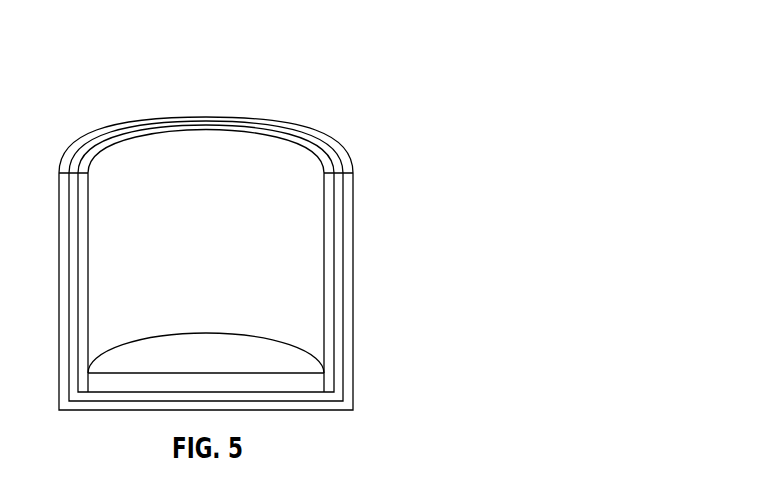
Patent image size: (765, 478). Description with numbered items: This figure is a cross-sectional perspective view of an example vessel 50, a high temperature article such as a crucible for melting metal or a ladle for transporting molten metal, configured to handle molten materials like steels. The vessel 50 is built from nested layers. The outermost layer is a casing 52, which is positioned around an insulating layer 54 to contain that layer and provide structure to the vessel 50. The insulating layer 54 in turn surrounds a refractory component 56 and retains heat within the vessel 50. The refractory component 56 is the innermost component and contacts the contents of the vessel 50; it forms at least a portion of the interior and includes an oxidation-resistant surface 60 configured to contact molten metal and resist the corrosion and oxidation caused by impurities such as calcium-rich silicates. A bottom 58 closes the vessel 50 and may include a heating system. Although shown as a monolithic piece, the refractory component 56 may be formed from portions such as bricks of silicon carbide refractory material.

The vessel 50 is at (243, 246).
The casing 52 is at (347, 273).
The insulating layer 54 is at (339, 312).
The refractory component 56 is at (328, 347).
The bottom 58 is at (320, 383).
The oxidation-resistant surface 60 is at (327, 236).